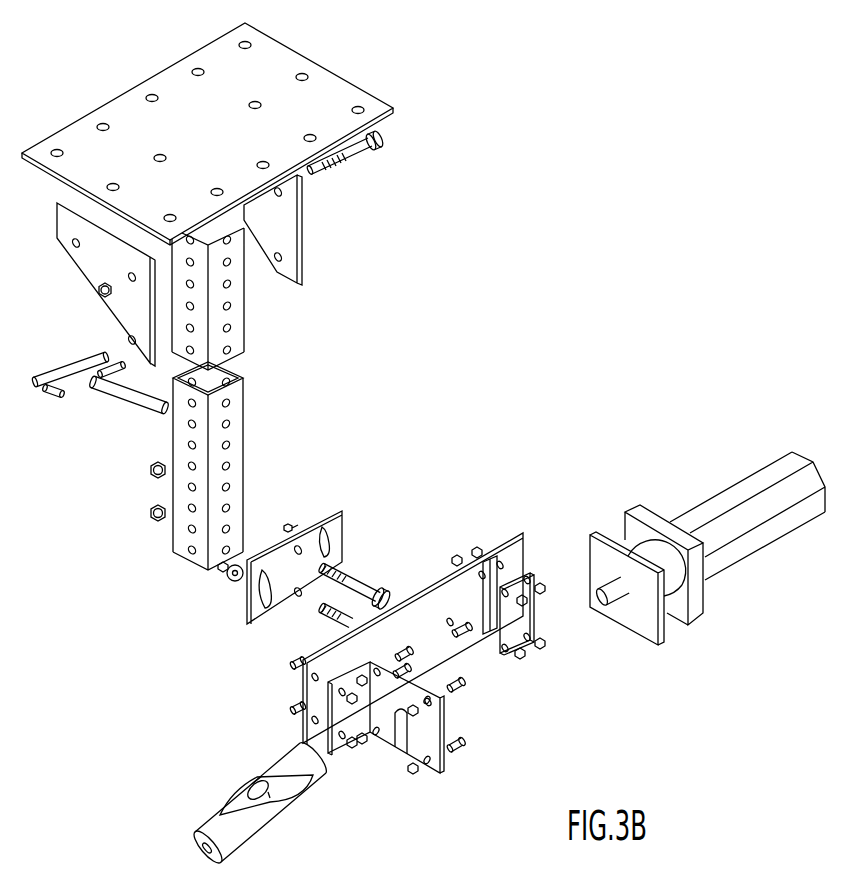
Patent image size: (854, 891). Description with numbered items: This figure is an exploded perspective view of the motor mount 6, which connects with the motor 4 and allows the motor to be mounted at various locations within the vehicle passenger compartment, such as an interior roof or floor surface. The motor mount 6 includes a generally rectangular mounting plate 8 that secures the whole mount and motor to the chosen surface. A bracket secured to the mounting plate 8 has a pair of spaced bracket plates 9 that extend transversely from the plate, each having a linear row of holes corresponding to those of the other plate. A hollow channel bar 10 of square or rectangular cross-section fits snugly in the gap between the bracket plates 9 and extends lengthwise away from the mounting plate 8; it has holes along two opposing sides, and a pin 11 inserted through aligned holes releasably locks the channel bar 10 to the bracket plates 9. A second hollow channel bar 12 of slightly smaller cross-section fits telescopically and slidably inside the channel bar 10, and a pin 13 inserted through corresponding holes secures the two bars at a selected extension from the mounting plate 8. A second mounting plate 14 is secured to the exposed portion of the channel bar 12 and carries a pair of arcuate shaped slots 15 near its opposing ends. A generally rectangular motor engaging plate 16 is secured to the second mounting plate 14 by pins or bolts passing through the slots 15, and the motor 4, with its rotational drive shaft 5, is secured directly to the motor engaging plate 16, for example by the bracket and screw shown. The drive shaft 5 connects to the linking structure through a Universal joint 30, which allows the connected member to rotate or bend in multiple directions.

The motor 4 is at (750, 545).
The rotational drive shaft 5 is at (618, 597).
The motor mount 6 is at (410, 312).
The mounting plate 8 is at (326, 85).
The bracket plates 9 is at (87, 277).
The channel bar 10 is at (245, 321).
The pin 11 is at (77, 373).
The second hollow channel bar 12 is at (237, 473).
The pin 13 is at (115, 389).
The second mounting plate 14 is at (313, 580).
The arcuate shaped slots 15 is at (270, 606).
The motor engaging plate 16 is at (523, 552).
The Universal joint 30 is at (213, 827).